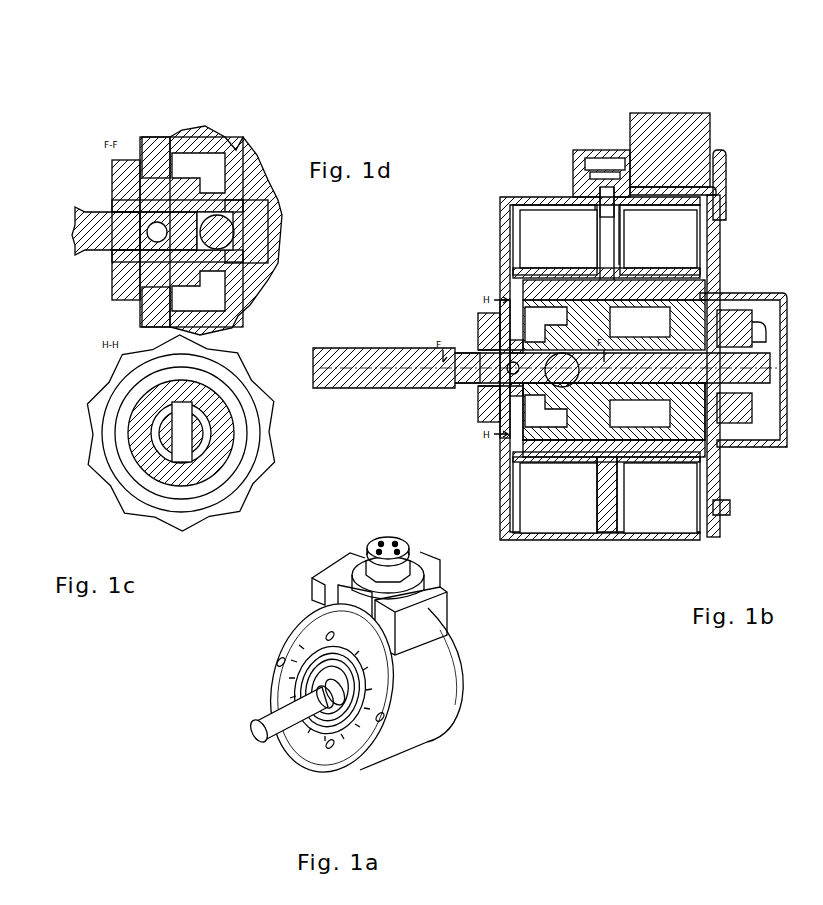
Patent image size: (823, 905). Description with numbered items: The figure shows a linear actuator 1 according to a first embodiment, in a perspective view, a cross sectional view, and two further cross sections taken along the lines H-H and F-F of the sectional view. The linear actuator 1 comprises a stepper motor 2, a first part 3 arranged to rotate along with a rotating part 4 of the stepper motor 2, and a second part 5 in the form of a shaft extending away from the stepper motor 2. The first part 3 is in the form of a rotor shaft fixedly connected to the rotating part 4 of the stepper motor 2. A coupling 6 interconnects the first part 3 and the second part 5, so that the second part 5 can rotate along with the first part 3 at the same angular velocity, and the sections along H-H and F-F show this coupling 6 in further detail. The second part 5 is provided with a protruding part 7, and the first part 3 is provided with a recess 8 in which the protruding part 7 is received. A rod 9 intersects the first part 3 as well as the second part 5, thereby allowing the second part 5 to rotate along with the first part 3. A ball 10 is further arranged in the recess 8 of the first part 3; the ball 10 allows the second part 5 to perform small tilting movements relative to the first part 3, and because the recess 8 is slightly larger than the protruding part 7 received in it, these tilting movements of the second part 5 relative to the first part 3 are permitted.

In FIG. 1B, the linear actuator 1 is at (708, 86).
In FIG. 1A, the linear actuator 1 is at (433, 745).
In FIG. 1B, the stepper motor 2 is at (662, 505).
In FIG. 1A, the stepper motor 2 is at (432, 677).
In FIG. 1B, the first part 3 is at (680, 360).
In FIG. 1D, the first part 3 is at (250, 243).
In FIG. 1C, the first part 3 is at (163, 430).
In FIG. 1B, the rotating part 4 is at (580, 423).
In FIG. 1B, the second part 5 is at (412, 370).
In FIG. 1D, the second part 5 is at (78, 243).
In FIG. 1A, the second part 5 is at (288, 718).
In FIG. 1B, the coupling 6 is at (500, 398).
In FIG. 1D, the coupling 6 is at (215, 130).
In FIG. 1C, the coupling 6 is at (205, 522).
In FIG. 1A, the coupling 6 is at (332, 697).
In FIG. 1B, the protruding part 7 is at (477, 360).
In FIG. 1D, the protruding part 7 is at (115, 233).
In FIG. 1C, the protruding part 7 is at (200, 437).
In FIG. 1B, the recess 8 is at (505, 398).
In FIG. 1D, the recess 8 is at (183, 213).
In FIG. 1B, the rod 9 is at (502, 353).
In FIG. 1D, the rod 9 is at (148, 228).
In FIG. 1C, the rod 9 is at (182, 443).
In FIG. 1B, the ball 10 is at (560, 365).
In FIG. 1D, the ball 10 is at (222, 228).